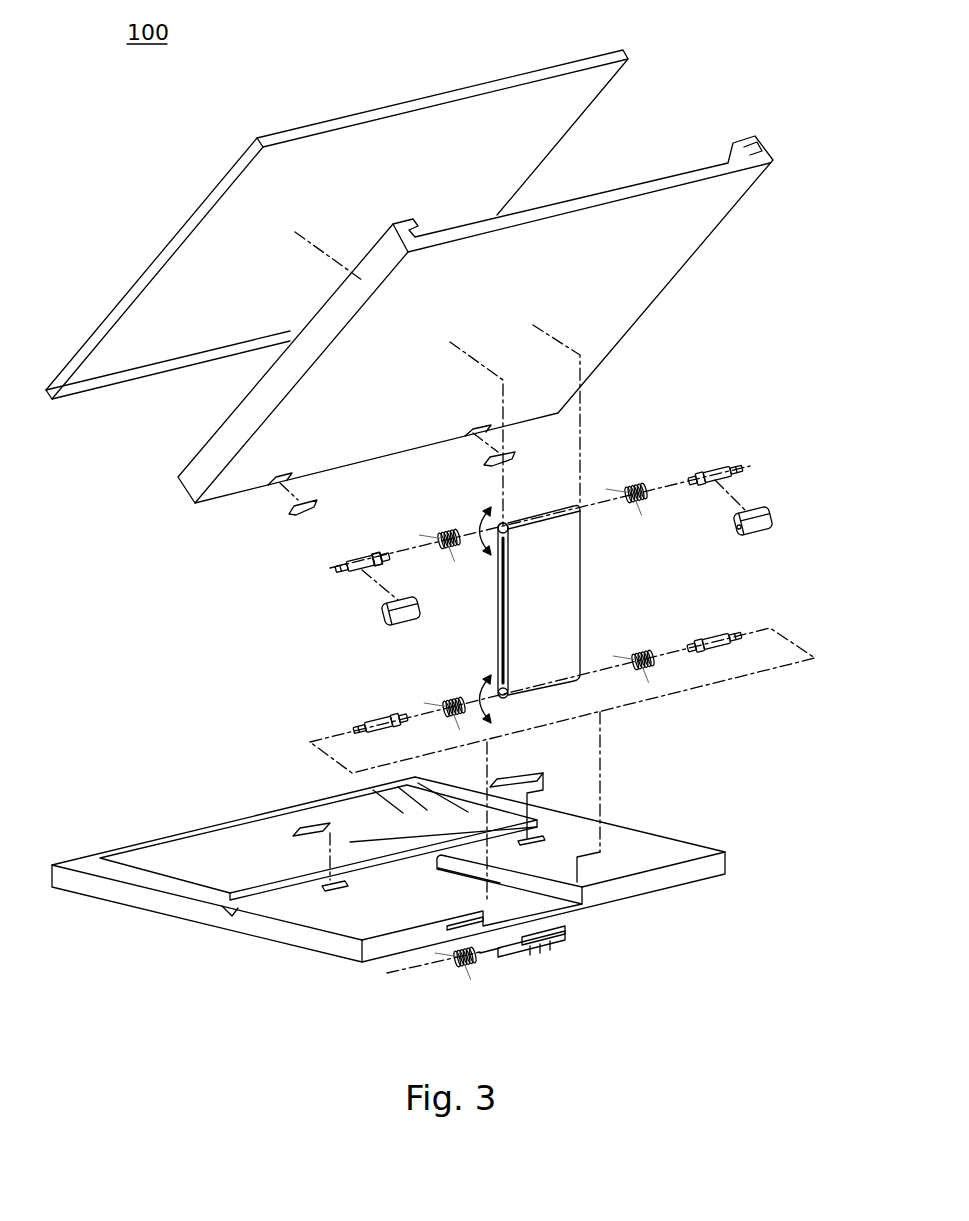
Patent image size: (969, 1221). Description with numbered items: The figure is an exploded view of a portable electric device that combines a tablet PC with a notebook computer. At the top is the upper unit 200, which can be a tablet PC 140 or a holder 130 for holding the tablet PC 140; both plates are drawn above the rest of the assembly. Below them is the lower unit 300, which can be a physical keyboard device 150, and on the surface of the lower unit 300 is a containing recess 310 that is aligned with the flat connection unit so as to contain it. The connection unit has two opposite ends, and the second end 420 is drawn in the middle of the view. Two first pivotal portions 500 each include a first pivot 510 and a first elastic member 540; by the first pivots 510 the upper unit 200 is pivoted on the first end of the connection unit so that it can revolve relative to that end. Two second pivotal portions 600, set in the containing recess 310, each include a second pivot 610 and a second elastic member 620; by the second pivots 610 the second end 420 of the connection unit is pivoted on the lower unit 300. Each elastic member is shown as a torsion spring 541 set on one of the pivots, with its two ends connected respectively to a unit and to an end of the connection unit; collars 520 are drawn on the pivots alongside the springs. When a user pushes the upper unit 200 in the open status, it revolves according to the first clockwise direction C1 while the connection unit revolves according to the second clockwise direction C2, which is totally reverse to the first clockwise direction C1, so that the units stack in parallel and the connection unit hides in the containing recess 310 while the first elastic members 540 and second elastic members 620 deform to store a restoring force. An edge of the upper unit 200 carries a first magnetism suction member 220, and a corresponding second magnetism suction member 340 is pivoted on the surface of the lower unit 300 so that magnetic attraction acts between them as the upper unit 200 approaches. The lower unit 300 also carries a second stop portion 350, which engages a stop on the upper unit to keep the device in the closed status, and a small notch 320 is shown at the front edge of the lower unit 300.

The holder 130 is at (628, 215).
The tablet PC 140 is at (412, 135).
The physical keyboard device 150 is at (157, 855).
The upper unit 200 is at (642, 334).
The first magnetism suction member 220 is at (302, 520).
The lower unit 300 is at (673, 826).
The containing recess 310 is at (549, 904).
The notch 320 is at (216, 910).
The second magnetism suction member 340 is at (306, 828).
The second stop portion 350 is at (541, 966).
The second end 420 is at (548, 703).
The first pivotal portion 500 is at (737, 441).
The first pivot 510 is at (350, 549).
The collar 520 is at (373, 552).
The first elastic member 540 is at (446, 526).
The torsion spring 541 is at (443, 559).
The second pivotal portion 600 is at (737, 610).
The second pivot 610 is at (350, 716).
The second elastic member 620 is at (438, 692).
The first clockwise direction C1 is at (481, 601).
The second clockwise direction C2 is at (495, 644).